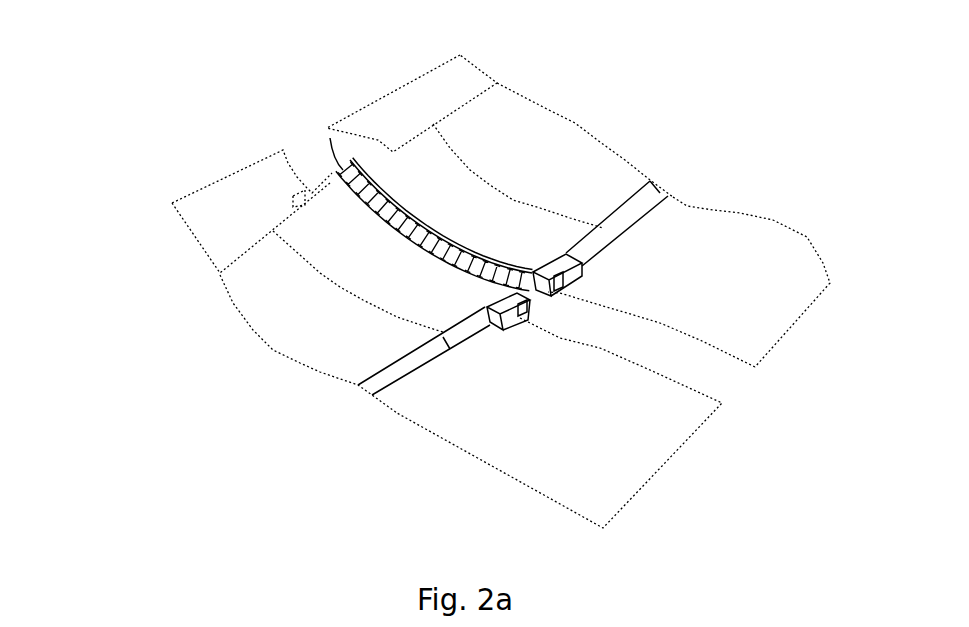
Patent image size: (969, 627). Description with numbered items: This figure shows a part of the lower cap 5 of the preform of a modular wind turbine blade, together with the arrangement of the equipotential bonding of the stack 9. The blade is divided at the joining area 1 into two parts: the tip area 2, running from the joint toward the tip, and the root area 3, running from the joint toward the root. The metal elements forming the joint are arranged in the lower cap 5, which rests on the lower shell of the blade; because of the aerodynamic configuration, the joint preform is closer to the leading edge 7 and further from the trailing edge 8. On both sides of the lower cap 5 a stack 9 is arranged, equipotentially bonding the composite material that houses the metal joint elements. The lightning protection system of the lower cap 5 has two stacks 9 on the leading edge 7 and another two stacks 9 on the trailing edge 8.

The joining area 1 is at (330, 223).
The tip area 2 is at (290, 342).
The root area 3 is at (573, 138).
The lower cap 5 is at (218, 275).
The leading edge 7 is at (433, 88).
The trailing edge 8 is at (722, 285).
The stack 9 is at (580, 267).